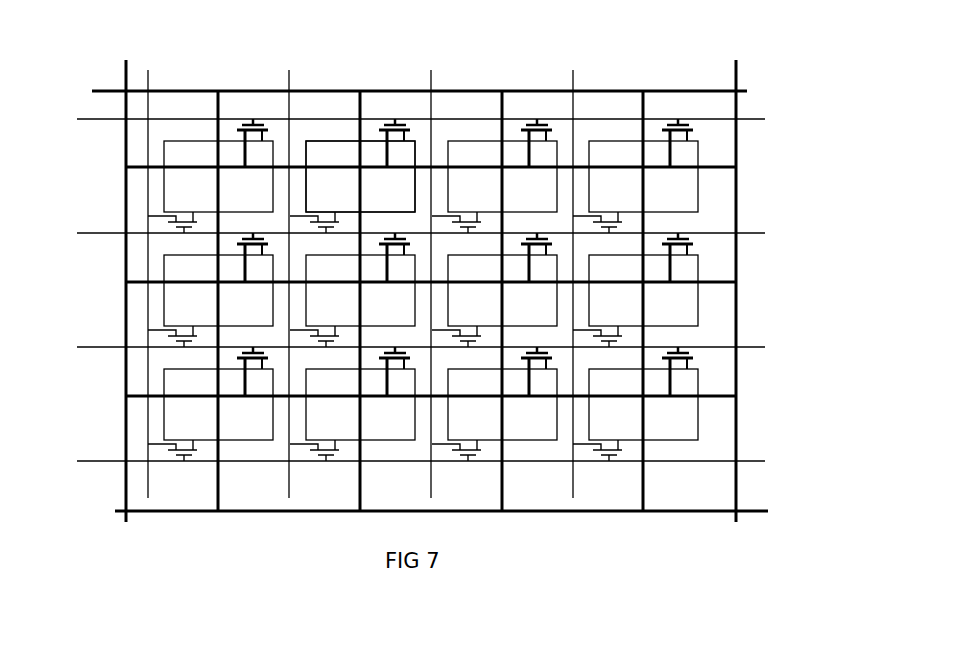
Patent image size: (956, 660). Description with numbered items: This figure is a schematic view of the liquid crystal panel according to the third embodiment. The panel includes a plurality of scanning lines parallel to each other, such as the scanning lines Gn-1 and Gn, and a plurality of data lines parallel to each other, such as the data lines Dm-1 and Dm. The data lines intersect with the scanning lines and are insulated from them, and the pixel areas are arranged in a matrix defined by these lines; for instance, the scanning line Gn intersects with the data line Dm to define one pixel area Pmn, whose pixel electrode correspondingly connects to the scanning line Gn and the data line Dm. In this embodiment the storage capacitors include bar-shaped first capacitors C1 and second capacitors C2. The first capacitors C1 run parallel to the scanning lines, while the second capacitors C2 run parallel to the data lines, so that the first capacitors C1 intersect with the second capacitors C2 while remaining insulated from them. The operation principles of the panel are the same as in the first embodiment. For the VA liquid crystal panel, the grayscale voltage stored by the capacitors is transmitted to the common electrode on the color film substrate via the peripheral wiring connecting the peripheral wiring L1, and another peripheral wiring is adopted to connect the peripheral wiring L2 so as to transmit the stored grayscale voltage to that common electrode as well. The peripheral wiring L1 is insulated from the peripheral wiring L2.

The peripheral wiring L1 is at (98, 92).
The peripheral wiring L2 is at (125, 70).
The data line Dm-1 is at (154, 266).
The data line Dm is at (287, 266).
The first capacitor C1 is at (414, 280).
The second capacitor C2 is at (427, 284).
The scanning line Gn-1 is at (395, 121).
The scanning line Gn is at (395, 235).
The pixel area Pmn is at (360, 176).